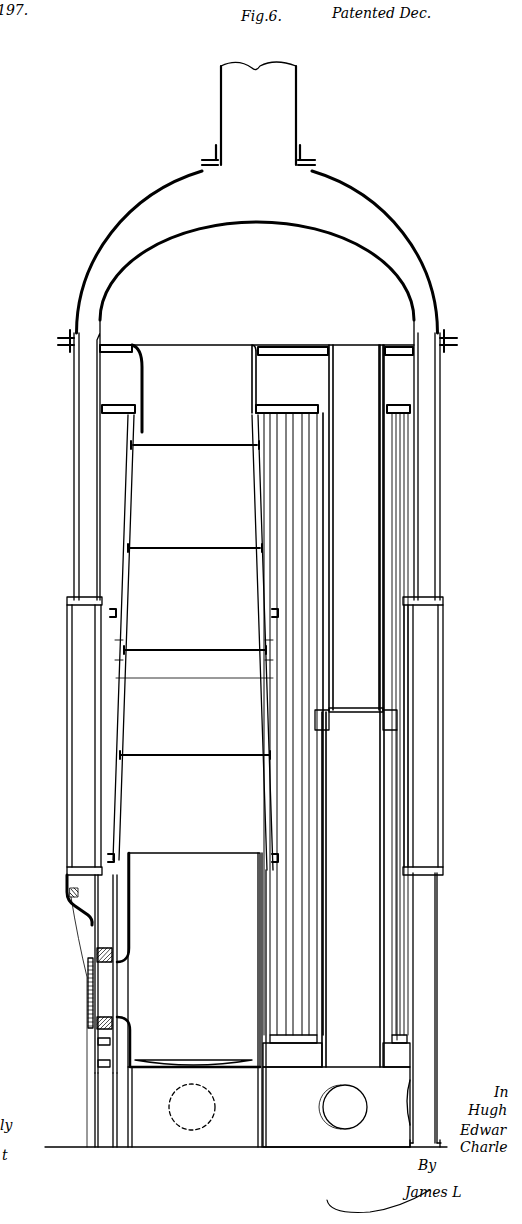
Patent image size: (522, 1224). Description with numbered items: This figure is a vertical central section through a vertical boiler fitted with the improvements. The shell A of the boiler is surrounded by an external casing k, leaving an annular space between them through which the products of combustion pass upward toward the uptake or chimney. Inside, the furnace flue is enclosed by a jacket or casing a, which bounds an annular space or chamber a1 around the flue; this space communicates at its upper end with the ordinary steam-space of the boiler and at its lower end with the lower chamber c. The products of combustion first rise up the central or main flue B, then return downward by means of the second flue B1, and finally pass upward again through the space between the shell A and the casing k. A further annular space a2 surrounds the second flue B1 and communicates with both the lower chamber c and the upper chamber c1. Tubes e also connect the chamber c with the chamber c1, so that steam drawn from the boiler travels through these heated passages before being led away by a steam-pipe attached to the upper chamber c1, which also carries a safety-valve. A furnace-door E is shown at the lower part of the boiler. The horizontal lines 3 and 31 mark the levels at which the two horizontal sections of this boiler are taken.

The shell of the boiler A is at (79, 509).
The jacket or casing a is at (197, 642).
The annular space or chamber a1 is at (120, 709).
The annular space a2 is at (380, 512).
The central or main flue B is at (193, 651).
The second flue B1 is at (356, 528).
The chamber c is at (269, 1000).
The upper chamber c1 is at (256, 706).
The tubes e is at (336, 728).
The external casing k is at (257, 722).
The furnace-door E is at (86, 995).
The section line 3 is at (77, 733).
The section line 31 is at (98, 1051).